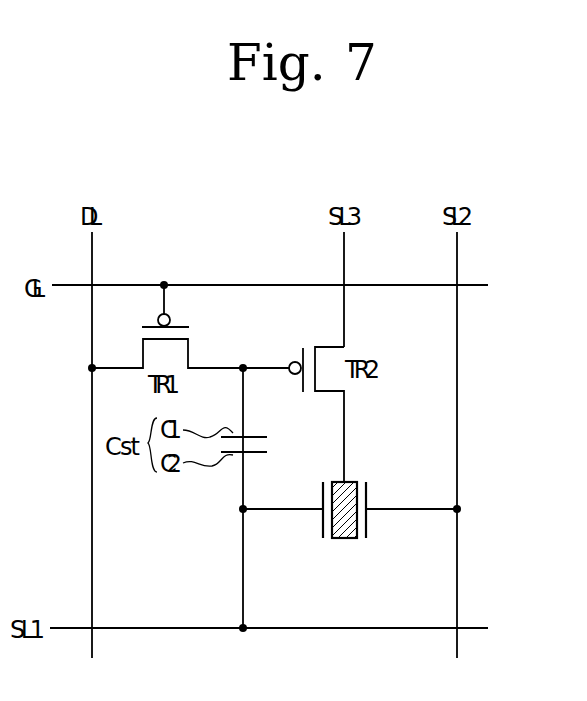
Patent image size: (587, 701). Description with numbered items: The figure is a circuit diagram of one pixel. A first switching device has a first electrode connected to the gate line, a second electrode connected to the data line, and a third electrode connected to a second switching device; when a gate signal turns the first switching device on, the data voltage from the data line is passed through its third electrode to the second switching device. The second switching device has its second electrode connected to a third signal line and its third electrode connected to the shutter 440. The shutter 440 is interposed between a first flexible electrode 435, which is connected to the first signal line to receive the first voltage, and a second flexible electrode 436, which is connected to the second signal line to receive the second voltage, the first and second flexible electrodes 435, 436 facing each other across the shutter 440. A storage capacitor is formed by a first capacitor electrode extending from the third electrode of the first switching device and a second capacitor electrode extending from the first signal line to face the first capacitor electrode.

The first flexible electrode 435 is at (323, 525).
The shutter 440 is at (343, 538).
The second flexible electrode 436 is at (366, 525).